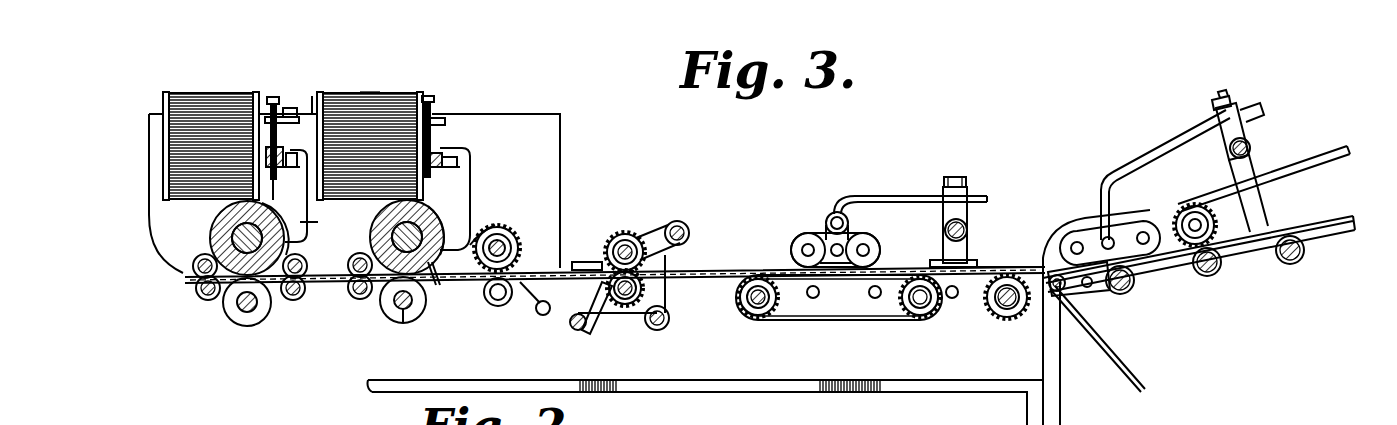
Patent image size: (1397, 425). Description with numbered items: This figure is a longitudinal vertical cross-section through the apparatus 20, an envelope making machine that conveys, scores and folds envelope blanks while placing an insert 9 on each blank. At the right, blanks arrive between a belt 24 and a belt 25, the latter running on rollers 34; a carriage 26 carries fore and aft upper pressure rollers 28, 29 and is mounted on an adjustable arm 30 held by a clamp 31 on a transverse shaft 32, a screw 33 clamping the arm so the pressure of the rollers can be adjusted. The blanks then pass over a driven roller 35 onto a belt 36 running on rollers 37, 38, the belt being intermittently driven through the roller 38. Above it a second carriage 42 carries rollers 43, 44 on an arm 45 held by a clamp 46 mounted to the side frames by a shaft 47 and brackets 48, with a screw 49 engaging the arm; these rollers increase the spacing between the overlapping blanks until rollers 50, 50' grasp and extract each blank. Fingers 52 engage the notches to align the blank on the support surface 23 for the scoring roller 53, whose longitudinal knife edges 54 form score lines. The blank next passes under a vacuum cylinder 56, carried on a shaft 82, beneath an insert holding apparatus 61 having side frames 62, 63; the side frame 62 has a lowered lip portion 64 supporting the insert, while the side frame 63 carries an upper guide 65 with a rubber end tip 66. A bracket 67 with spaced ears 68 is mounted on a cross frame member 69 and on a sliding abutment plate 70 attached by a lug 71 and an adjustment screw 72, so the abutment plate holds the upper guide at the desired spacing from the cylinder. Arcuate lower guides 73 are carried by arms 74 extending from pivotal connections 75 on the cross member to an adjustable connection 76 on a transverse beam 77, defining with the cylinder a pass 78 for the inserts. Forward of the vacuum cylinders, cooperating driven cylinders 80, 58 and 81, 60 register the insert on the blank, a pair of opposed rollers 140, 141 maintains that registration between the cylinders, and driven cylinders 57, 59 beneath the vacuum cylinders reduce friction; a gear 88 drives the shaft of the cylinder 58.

The insert 9 is at (370, 90).
The apparatus 20 is at (1052, 143).
The support surface 23 is at (971, 272).
The belt 24 is at (1310, 160).
The belt 25 is at (1350, 232).
The carriage 26 is at (1092, 226).
The upper pressure roller 28 is at (1065, 236).
The upper pressure roller 29 is at (1140, 212).
The adjustable arm 30 is at (1147, 162).
The clamp 31 is at (1248, 129).
The transverse shaft 32 is at (1251, 150).
The screw 33 is at (1213, 104).
The rollers 34 is at (1100, 292).
The driven roller 35 is at (1015, 320).
The belt 36 is at (863, 324).
The roller 37 is at (932, 324).
The roller 38 is at (750, 316).
The carriage 42 is at (815, 233).
The roller 43 is at (791, 248).
The roller 44 is at (880, 240).
The arm 45 is at (888, 195).
The clamp 46 is at (966, 192).
The shaft 47 is at (968, 236).
The brackets 48 is at (977, 266).
The screw 49 is at (955, 177).
The roller 50 is at (619, 295).
The roller 50' is at (646, 238).
The fingers 52 is at (537, 302).
The scoring roller 53 is at (522, 250).
The longitudinal knife edges 54 is at (520, 237).
The vacuum cylinder 56 is at (213, 223).
The driven cylinder 57 is at (415, 314).
The driven cylinder 58 is at (368, 300).
The driven cylinder 59 is at (255, 326).
The driven cylinder 60 is at (205, 300).
The insert holding apparatus 61 is at (166, 92).
The side frame 62 is at (314, 95).
The side frame 63 is at (418, 90).
The lowered lip portion 64 is at (168, 205).
The upper guide 65 is at (276, 202).
The rubber end tip 66 is at (428, 206).
The bracket 67 is at (289, 116).
The spaced ears 68 is at (470, 163).
The cross frame member 69 is at (271, 202).
The sliding abutment plate 70 is at (426, 96).
The lug 71 is at (440, 114).
The adjustment screw 72 is at (273, 97).
The lower guides 73 is at (485, 288).
The arms 74 is at (470, 194).
The pivotal connection 75 is at (284, 150).
The adjustable connection 76 is at (300, 224).
The transverse beam 77 is at (505, 228).
The pass 78 is at (436, 283).
The driven cylinder 80 is at (350, 277).
The driven cylinder 81 is at (203, 255).
The shaft 82 is at (395, 236).
The gear 88 is at (403, 318).
The roller 140 is at (302, 258).
The roller 141 is at (292, 300).